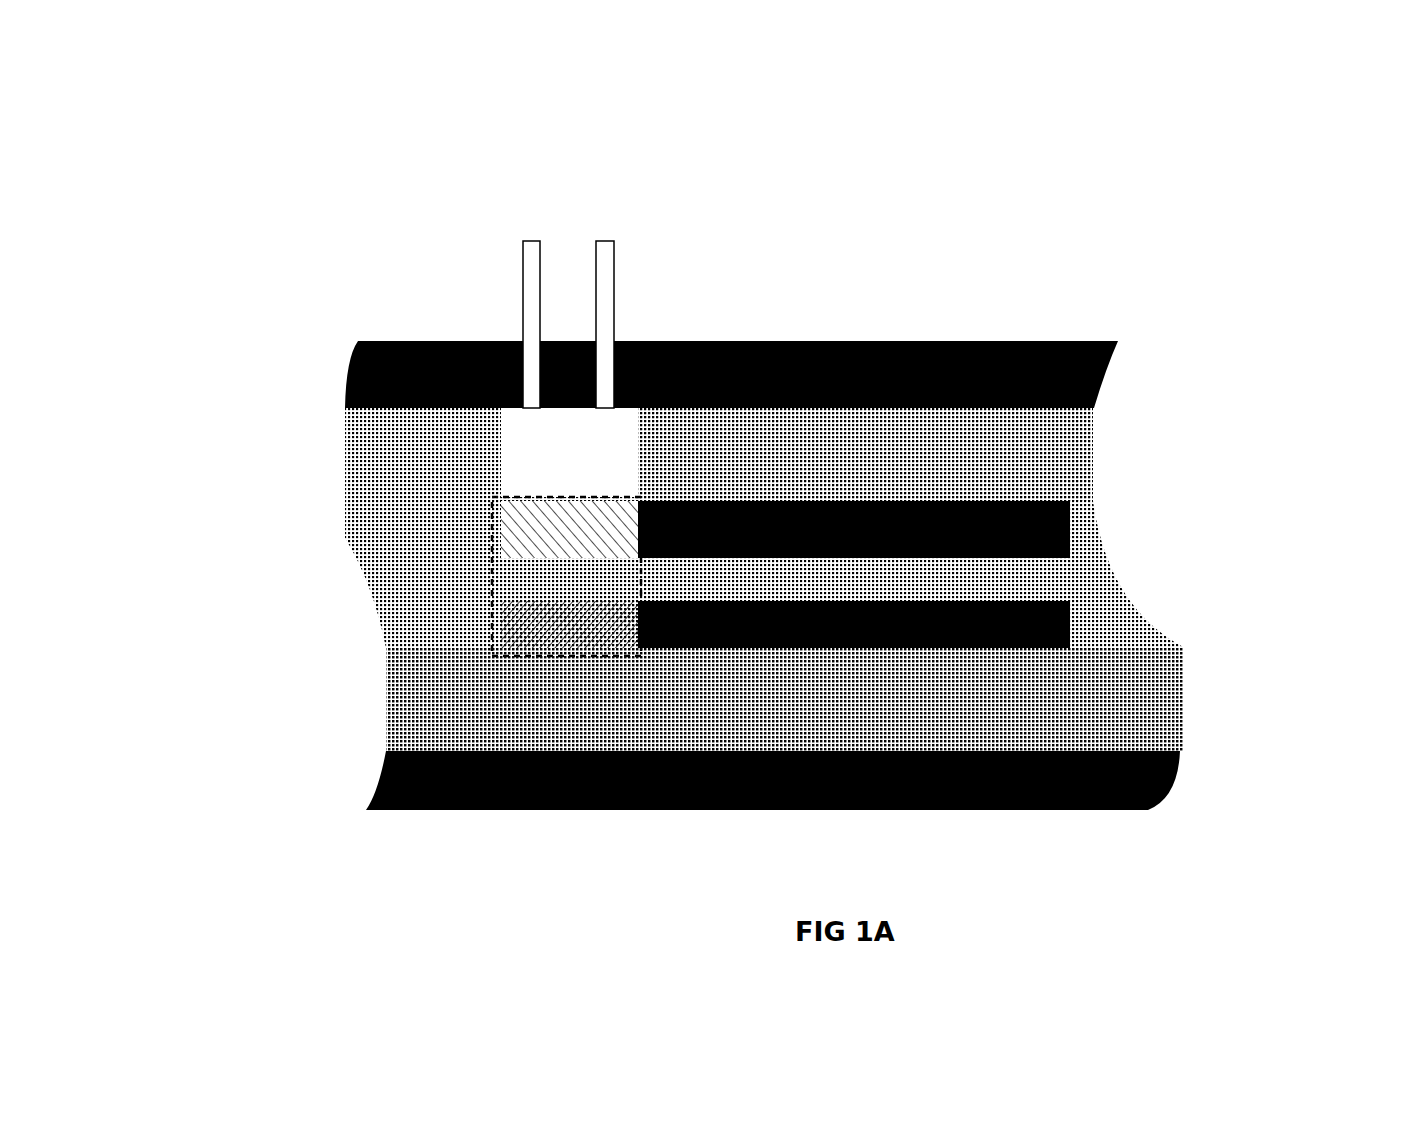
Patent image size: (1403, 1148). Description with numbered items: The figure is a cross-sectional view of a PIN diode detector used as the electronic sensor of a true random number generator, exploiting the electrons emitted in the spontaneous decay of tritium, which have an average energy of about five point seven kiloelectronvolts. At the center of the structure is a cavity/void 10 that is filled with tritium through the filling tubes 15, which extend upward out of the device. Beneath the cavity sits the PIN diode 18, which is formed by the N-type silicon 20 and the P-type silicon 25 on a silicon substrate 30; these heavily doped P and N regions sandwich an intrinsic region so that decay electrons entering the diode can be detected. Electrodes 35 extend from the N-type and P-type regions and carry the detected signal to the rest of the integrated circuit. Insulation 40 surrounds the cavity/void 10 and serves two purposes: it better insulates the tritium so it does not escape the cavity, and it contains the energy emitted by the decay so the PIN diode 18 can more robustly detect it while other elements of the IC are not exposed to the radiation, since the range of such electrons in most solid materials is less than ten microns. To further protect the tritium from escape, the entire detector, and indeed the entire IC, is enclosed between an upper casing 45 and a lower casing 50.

The cavity/void 10 is at (573, 452).
The filling tubes 15 is at (532, 233).
The PIN diode 18 is at (485, 649).
The N-type silicon 20 is at (563, 522).
The P-type silicon 25 is at (565, 620).
The silicon substrate 30 is at (1123, 658).
The electrodes 35 is at (1063, 593).
The insulation 40 is at (1062, 455).
The upper casing 45 is at (860, 347).
The lower casing 50 is at (1147, 763).